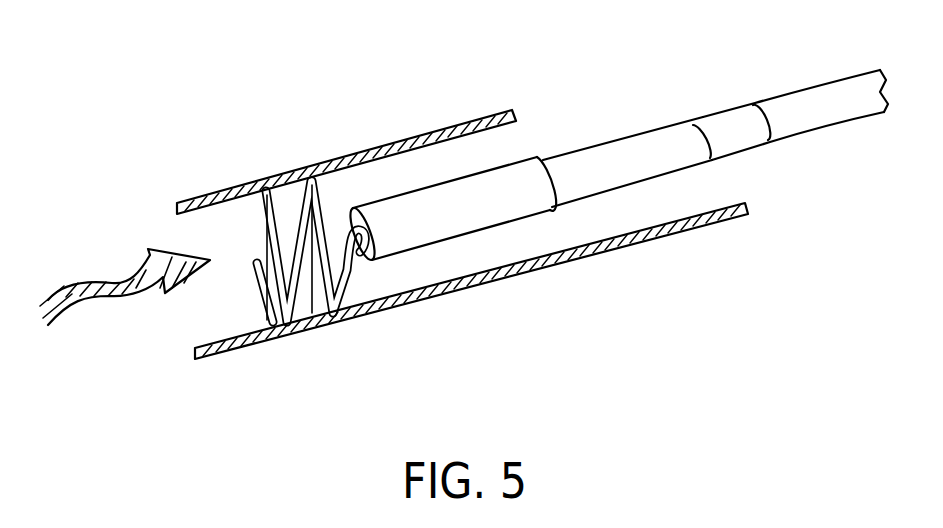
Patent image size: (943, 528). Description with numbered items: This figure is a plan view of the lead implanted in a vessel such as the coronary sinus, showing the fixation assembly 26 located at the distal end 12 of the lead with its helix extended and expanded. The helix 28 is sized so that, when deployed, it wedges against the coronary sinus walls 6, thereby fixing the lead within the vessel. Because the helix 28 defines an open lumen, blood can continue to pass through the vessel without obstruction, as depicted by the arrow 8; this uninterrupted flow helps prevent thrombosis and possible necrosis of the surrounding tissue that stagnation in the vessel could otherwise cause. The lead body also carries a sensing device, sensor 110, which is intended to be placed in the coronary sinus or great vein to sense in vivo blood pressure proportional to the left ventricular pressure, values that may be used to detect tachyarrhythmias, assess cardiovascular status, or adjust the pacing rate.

The coronary sinus walls 6 is at (418, 136).
The arrow 8 is at (58, 297).
The distal end 12 is at (612, 163).
The fixation assembly 26 is at (512, 208).
The helix 28 is at (315, 178).
The sensor 110 is at (723, 127).